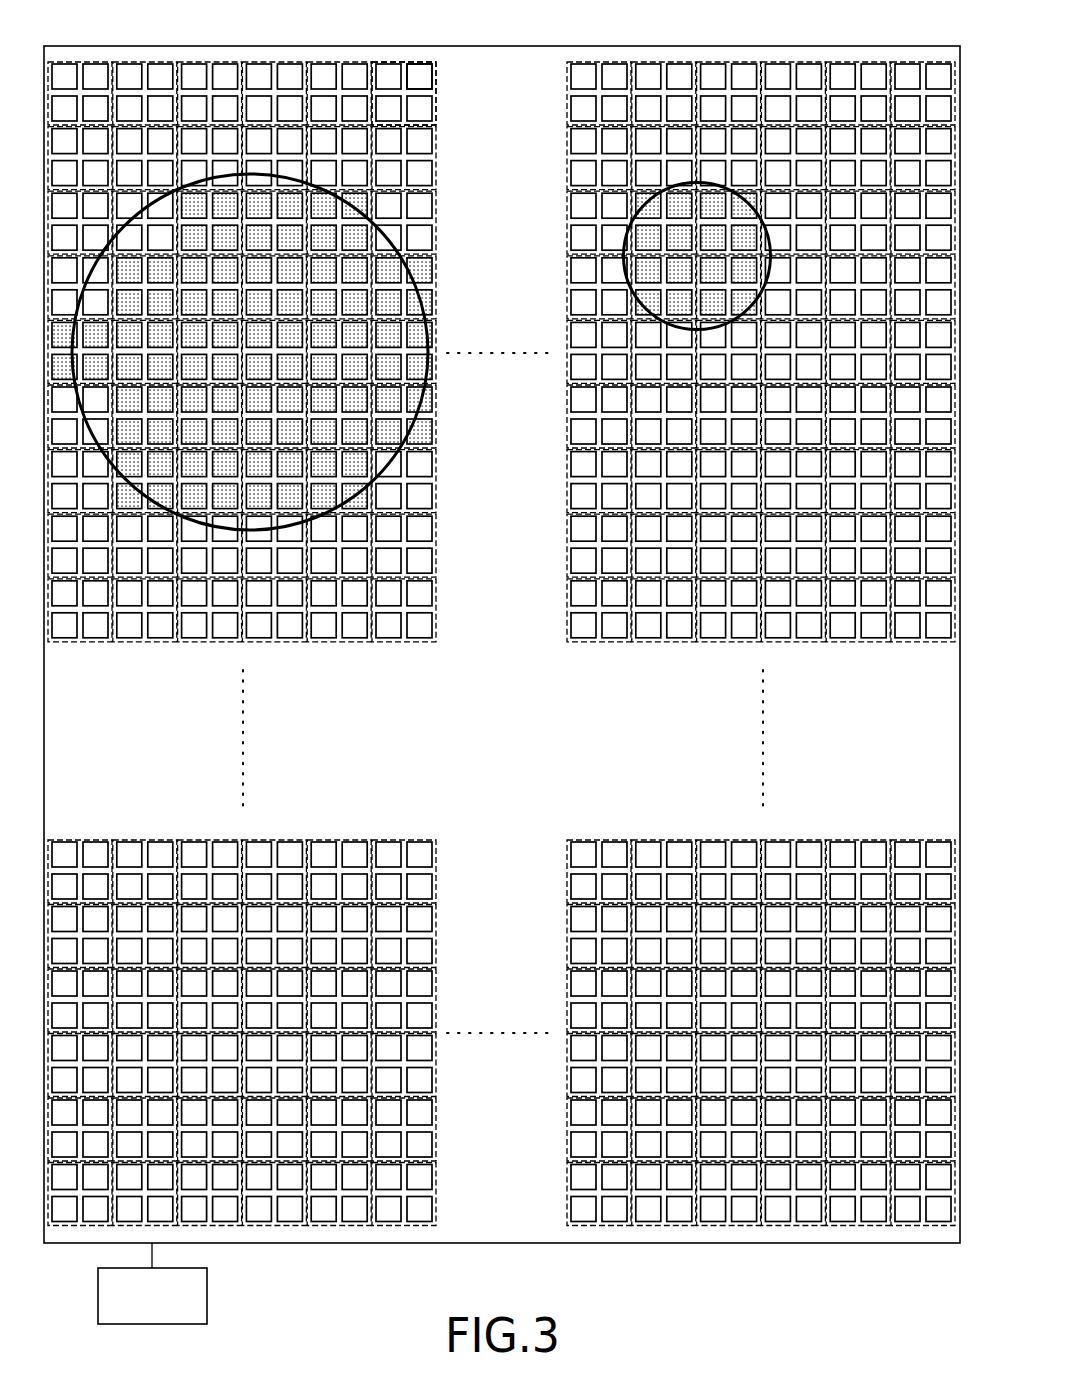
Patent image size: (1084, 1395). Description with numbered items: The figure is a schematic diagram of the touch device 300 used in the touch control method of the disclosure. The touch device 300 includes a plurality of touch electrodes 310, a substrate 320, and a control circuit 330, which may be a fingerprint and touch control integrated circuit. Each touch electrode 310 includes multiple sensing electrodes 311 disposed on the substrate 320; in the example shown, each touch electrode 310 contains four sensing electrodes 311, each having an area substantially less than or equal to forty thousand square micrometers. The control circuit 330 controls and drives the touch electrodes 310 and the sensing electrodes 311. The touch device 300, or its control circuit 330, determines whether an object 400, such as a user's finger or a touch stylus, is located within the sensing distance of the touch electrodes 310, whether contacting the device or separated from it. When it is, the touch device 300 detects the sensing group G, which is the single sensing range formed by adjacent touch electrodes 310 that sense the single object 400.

The touch device 300 is at (522, 30).
The touch electrode 310 is at (436, 95).
The sensing electrode 311 is at (421, 70).
The substrate 320 is at (522, 761).
The control circuit 330 is at (152, 1283).
The object 400 is at (393, 244).
The sensing group G is at (641, 195).